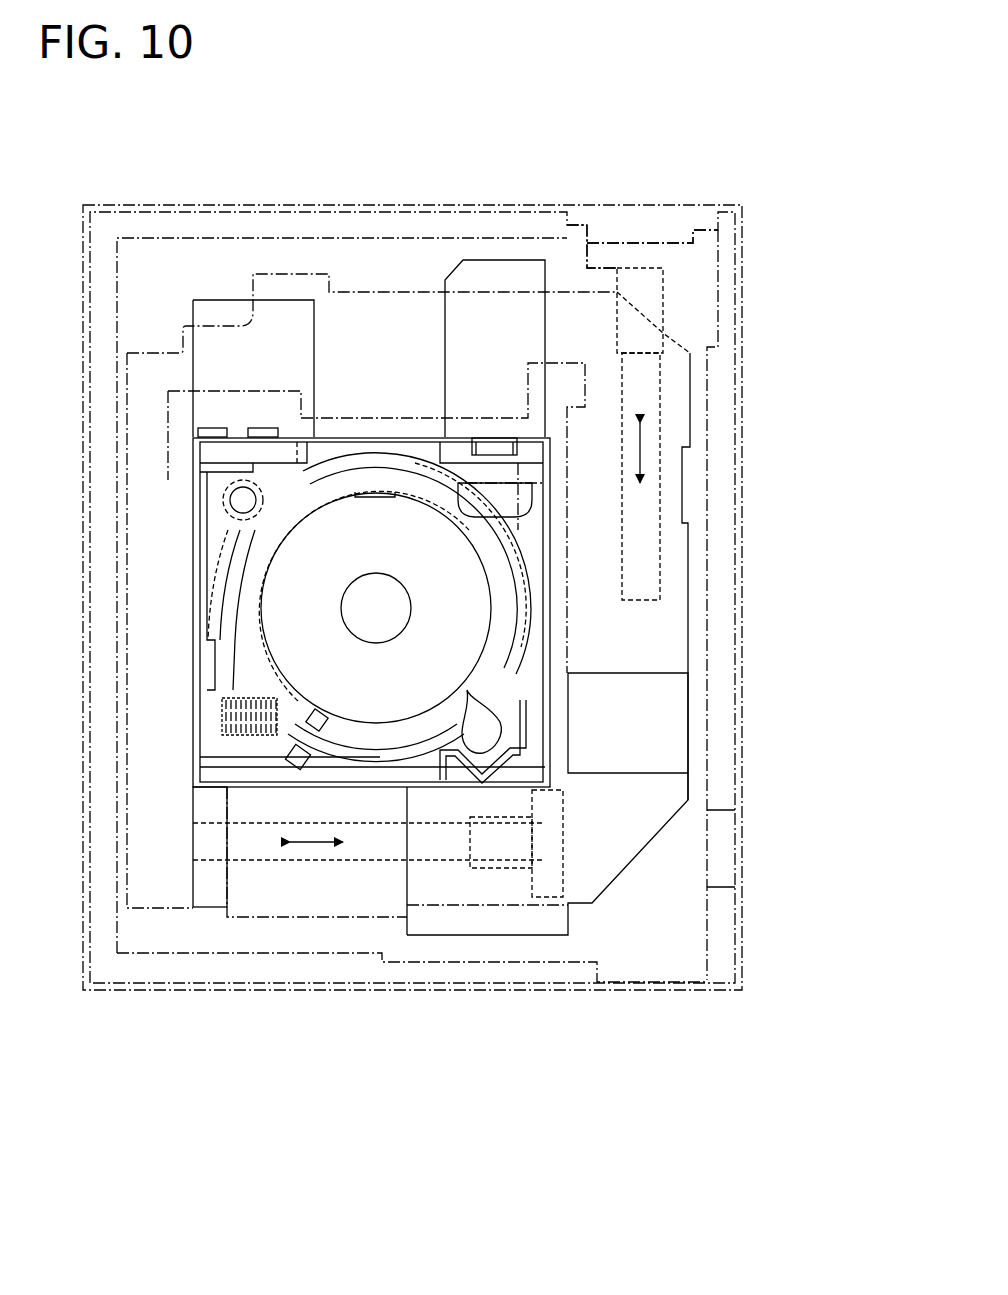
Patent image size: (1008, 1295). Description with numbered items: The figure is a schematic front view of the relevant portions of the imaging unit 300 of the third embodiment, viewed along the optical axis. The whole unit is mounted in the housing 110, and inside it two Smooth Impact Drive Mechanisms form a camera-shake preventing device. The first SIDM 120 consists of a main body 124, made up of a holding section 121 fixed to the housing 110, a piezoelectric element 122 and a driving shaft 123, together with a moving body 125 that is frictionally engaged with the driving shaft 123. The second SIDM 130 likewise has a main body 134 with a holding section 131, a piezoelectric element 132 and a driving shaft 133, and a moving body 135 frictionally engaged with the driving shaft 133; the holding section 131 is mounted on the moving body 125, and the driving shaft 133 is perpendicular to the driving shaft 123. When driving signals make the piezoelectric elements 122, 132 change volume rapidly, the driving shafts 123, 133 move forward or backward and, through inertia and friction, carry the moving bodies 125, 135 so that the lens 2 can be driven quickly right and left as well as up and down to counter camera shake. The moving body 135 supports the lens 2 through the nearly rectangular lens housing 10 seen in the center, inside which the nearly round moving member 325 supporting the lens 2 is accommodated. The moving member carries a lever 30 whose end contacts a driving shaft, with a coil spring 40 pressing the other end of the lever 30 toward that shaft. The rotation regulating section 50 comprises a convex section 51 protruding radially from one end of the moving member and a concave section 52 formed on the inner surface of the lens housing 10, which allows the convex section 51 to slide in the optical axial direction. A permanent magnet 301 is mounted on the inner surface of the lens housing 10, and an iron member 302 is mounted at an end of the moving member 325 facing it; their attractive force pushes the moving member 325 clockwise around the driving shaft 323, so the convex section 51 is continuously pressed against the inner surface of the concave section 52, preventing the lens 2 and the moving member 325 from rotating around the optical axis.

The imaging unit 300 is at (490, 130).
The housing 110 is at (177, 205).
The SIDM 120 is at (869, 222).
The holding section 121 is at (680, 255).
The piezoelectric element 122 is at (655, 298).
The driving shaft 123 is at (652, 370).
The main body 124 is at (814, 163).
The moving body 125 is at (668, 467).
The SIDM 130 is at (488, 1122).
The holding section 131 is at (553, 877).
The piezoelectric element 132 is at (505, 855).
The driving shaft 133 is at (285, 855).
The main body 134 is at (543, 1076).
The moving body 135 is at (210, 897).
The lens 2 is at (397, 605).
The lens housing 10 is at (537, 592).
The lever 30 is at (232, 655).
The coil spring 40 is at (227, 747).
The rotation regulating section 50 is at (822, 667).
The convex section 51 is at (478, 727).
The concave section 52 is at (515, 746).
The permanent magnet 301 is at (298, 757).
The iron member 302 is at (312, 722).
The driving shaft 323 is at (243, 505).
The moving member 325 is at (470, 645).